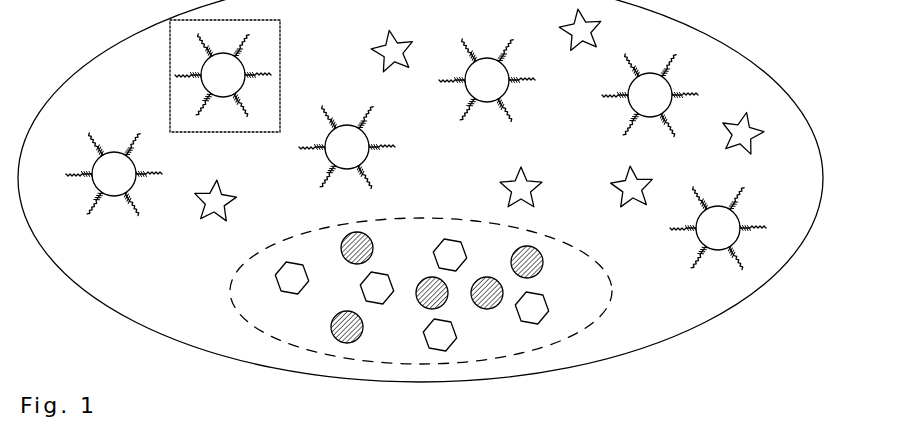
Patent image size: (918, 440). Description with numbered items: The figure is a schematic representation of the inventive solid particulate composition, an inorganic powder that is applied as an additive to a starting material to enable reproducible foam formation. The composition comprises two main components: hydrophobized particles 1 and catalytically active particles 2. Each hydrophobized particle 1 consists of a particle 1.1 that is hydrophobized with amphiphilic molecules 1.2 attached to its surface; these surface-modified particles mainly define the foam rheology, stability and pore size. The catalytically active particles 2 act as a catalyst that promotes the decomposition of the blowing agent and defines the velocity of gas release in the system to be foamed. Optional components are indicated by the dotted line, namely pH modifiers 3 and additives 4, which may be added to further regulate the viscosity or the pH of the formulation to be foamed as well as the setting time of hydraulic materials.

The hydrophobized particles 1 is at (169, 98).
The particle 1.1 is at (212, 68).
The amphiphilic molecules 1.2 is at (247, 40).
The catalytically active particles 2 is at (400, 48).
The pH modifiers 3 is at (545, 300).
The additives 4 is at (331, 326).